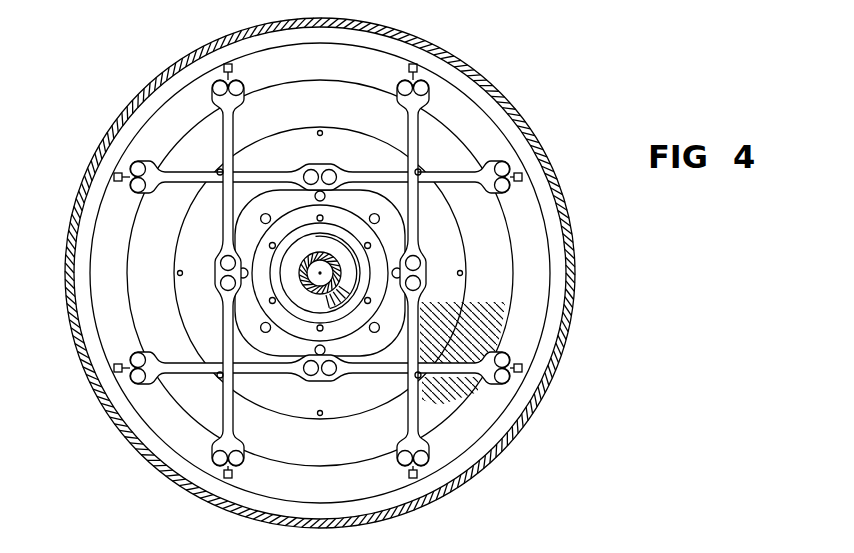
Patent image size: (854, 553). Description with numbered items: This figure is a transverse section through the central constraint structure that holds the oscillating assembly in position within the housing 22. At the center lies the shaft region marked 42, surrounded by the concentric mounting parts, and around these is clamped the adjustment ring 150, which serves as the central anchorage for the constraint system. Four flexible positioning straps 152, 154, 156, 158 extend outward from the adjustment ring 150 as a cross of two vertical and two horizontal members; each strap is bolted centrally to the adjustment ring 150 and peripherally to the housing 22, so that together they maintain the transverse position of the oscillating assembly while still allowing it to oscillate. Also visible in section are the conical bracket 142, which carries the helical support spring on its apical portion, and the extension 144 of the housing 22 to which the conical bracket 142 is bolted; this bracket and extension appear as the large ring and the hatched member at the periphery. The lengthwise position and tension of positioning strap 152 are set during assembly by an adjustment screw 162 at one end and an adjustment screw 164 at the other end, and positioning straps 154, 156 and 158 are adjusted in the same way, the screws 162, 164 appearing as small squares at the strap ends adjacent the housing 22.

The housing 22 is at (578, 283).
The shaft 42 is at (330, 255).
The conical bracket 142 is at (373, 387).
The extension 144 is at (434, 398).
The adjustment ring 150 is at (393, 208).
The positioning strap 152 is at (418, 203).
The positioning strap 154 is at (256, 376).
The positioning strap 156 is at (222, 207).
The positioning strap 158 is at (257, 172).
The adjustment screw 162 is at (232, 69).
The adjustment screw 164 is at (521, 172).